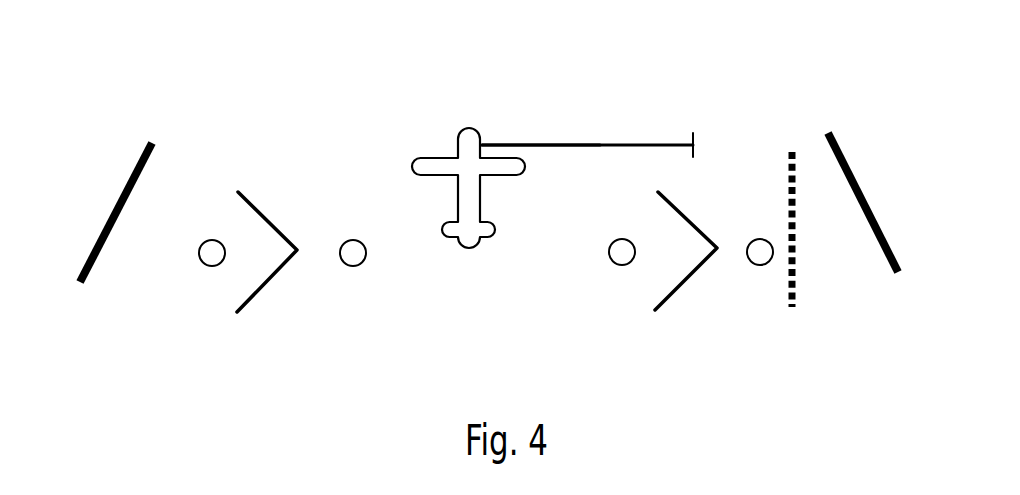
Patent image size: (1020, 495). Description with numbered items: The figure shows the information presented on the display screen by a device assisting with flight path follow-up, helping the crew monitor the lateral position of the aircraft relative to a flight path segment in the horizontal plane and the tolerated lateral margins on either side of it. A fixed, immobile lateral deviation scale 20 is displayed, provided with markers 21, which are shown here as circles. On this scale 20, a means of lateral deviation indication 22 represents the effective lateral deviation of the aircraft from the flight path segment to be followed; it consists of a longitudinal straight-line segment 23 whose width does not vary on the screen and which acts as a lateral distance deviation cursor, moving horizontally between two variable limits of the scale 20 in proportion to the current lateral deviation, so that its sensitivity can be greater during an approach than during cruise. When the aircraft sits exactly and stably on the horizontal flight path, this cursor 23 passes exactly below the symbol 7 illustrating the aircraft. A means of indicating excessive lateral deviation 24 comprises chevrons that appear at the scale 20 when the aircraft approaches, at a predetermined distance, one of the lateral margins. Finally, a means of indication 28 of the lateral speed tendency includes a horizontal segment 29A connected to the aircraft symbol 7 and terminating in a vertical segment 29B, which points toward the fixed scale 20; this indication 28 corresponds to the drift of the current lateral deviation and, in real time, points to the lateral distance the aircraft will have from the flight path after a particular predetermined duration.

The aircraft symbol 7 is at (470, 249).
The lateral deviation scale 20 is at (172, 267).
The markers 21 is at (356, 266).
The means of lateral deviation indication 22 is at (797, 342).
The longitudinal straight-line segment 23 is at (796, 273).
The means of indicating excessive lateral deviation 24 is at (237, 338).
The means of indication of the lateral speed tendency 28 is at (543, 110).
The horizontal segment 29A is at (600, 143).
The vertical segment 29B is at (693, 148).